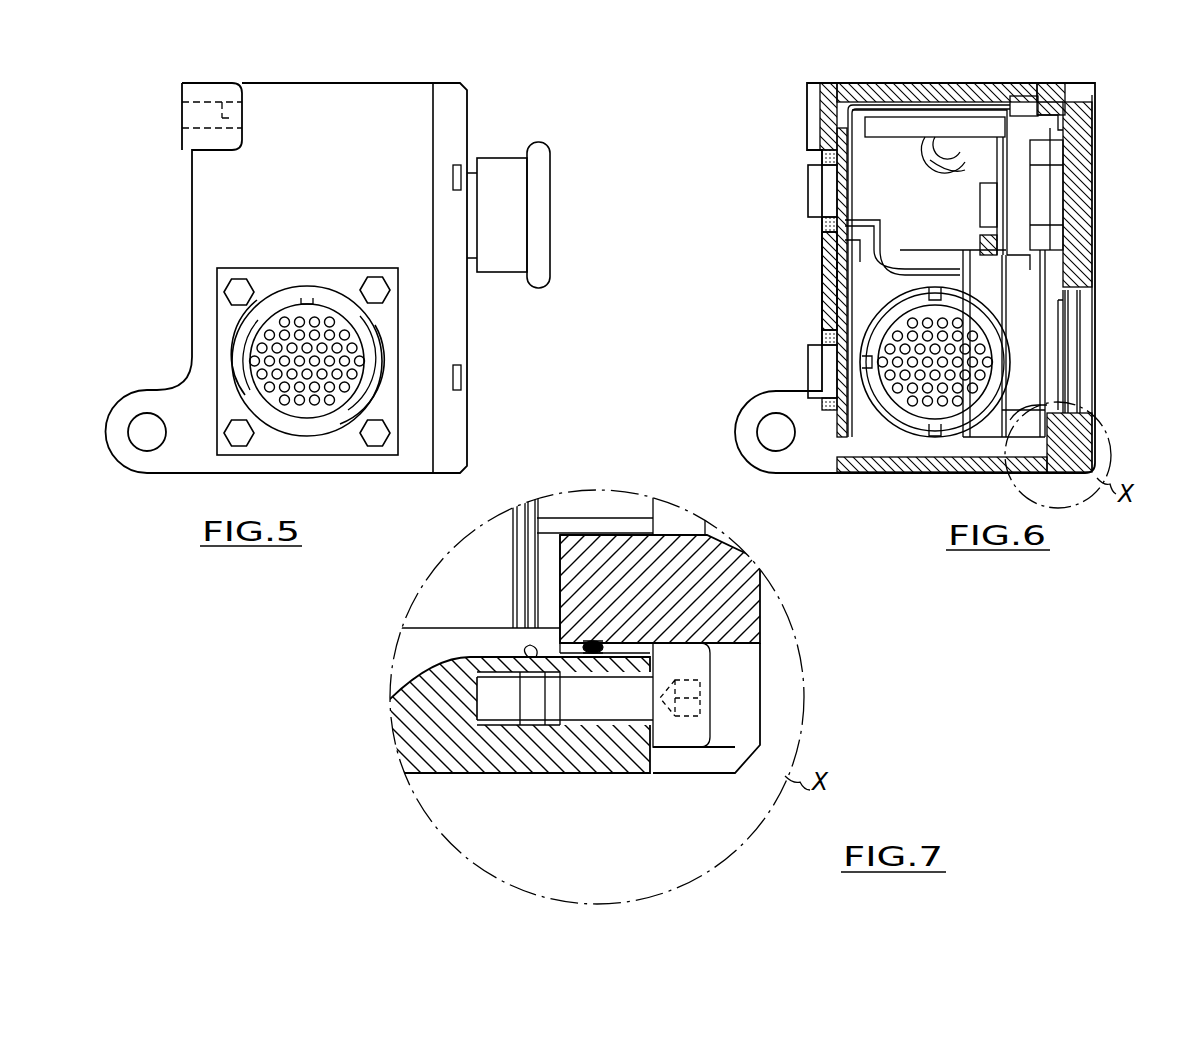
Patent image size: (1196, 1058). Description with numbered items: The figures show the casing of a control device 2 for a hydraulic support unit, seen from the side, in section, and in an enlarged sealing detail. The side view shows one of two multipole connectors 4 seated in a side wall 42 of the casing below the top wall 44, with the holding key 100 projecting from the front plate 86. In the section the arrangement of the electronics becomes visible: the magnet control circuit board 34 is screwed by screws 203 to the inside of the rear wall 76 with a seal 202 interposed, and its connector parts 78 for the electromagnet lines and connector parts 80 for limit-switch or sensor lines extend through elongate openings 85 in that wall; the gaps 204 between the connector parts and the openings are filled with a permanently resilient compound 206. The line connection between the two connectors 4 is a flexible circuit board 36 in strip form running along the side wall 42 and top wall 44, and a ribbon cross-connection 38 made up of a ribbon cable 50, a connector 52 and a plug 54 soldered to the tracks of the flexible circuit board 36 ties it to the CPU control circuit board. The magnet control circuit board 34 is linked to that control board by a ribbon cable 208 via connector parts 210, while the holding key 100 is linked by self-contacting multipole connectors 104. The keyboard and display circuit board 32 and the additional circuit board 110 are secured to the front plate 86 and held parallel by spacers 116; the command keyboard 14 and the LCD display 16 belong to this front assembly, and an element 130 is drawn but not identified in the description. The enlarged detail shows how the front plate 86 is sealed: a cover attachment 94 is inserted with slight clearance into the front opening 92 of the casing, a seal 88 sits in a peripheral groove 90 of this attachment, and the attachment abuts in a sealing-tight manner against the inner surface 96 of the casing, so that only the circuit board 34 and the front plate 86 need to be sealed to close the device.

In FIG. 5, the control device 2 is at (304, 276).
In FIG. 6, the control device 2 is at (1140, 106).
In FIG. 5, the multipole connector 4 is at (330, 420).
In FIG. 6, the multipole connector 4 is at (918, 400).
In FIG. 6, the command keyboard 14 is at (1104, 306).
In FIG. 6, the display 16 is at (1108, 186).
In FIG. 6, the keyboard and display circuit board 32 is at (1038, 403).
In FIG. 6, the magnet control circuit board 34 is at (835, 278).
In FIG. 6, the flexible circuit board 36 is at (944, 110).
In FIG. 6, the ribbon cross-connection 38 is at (930, 152).
In FIG. 5, the side wall 42 is at (330, 209).
In FIG. 5, the top wall 44 is at (326, 84).
In FIG. 6, the top wall 44 is at (850, 84).
In FIG. 6, the ribbon cable 50 is at (996, 115).
In FIG. 6, the connector 52 is at (960, 165).
In FIG. 6, the plug 54 is at (952, 130).
In FIG. 6, the rear wall 76 is at (830, 300).
In FIG. 6, the connector part 78 is at (818, 183).
In FIG. 6, the connector part 80 is at (818, 362).
In FIG. 6, the elongate opening 85 is at (816, 232).
In FIG. 5, the front plate 86 is at (462, 330).
In FIG. 6, the front plate 86 is at (1085, 255).
In FIG. 7, the front plate 86 is at (745, 605).
In FIG. 7, the seal 88 is at (592, 775).
In FIG. 7, the peripheral groove 90 is at (590, 640).
In FIG. 7, the front opening 92 is at (478, 644).
In FIG. 7, the cover attachment 94 is at (610, 540).
In FIG. 7, the inner surface 96 is at (517, 775).
In FIG. 5, the holding key 100 is at (500, 155).
In FIG. 6, the self-contacting multipole connector 104 is at (980, 225).
In FIG. 6, the additional circuit board 110 is at (962, 262).
In FIG. 6, the spacer 116 is at (1048, 400).
In FIG. 6, the post 130 is at (1003, 258).
In FIG. 6, the seal 202 is at (836, 95).
In FIG. 6, the screw 203 is at (880, 130).
In FIG. 6, the gap 204 is at (818, 337).
In FIG. 6, the permanently resilient compound 206 is at (820, 157).
In FIG. 6, the ribbon cable 208 is at (886, 268).
In FIG. 6, the connector part 210 is at (835, 245).